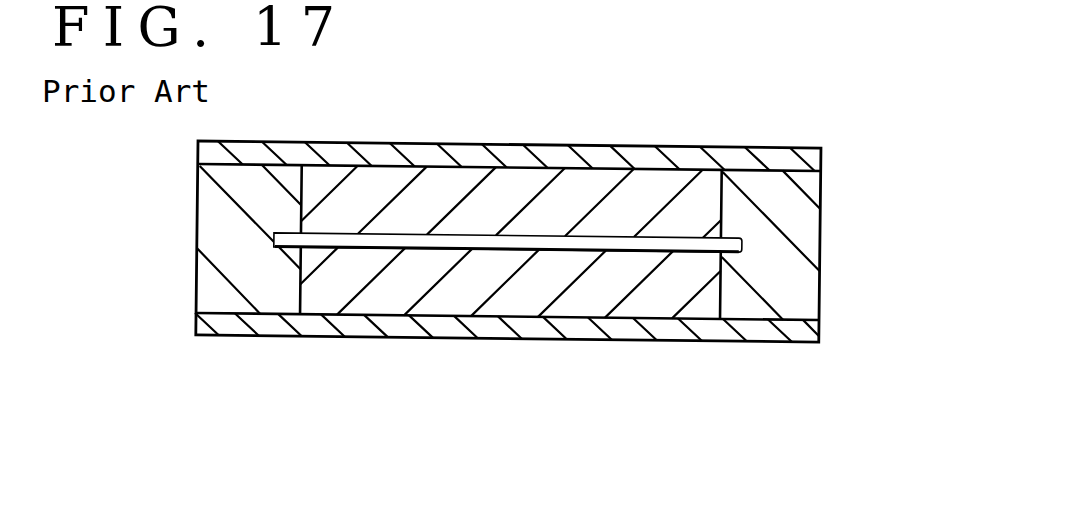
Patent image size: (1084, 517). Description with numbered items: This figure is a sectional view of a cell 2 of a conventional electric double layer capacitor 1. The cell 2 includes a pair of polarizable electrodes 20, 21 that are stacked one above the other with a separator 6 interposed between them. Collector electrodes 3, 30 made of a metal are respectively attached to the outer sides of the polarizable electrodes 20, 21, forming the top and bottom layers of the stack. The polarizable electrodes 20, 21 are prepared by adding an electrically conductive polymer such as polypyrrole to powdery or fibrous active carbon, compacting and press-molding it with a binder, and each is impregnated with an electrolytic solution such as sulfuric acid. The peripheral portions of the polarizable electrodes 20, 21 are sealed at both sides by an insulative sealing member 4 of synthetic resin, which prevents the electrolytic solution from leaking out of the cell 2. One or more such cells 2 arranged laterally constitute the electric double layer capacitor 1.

The electric double layer capacitor 1 is at (852, 280).
The cell 2 is at (843, 415).
The collector electrode 3 is at (392, 326).
The sealing member 4 is at (214, 218).
The separator 6 is at (578, 246).
The polarizable electrode 20 is at (518, 303).
The polarizable electrode 21 is at (663, 220).
The collector electrode 30 is at (740, 162).